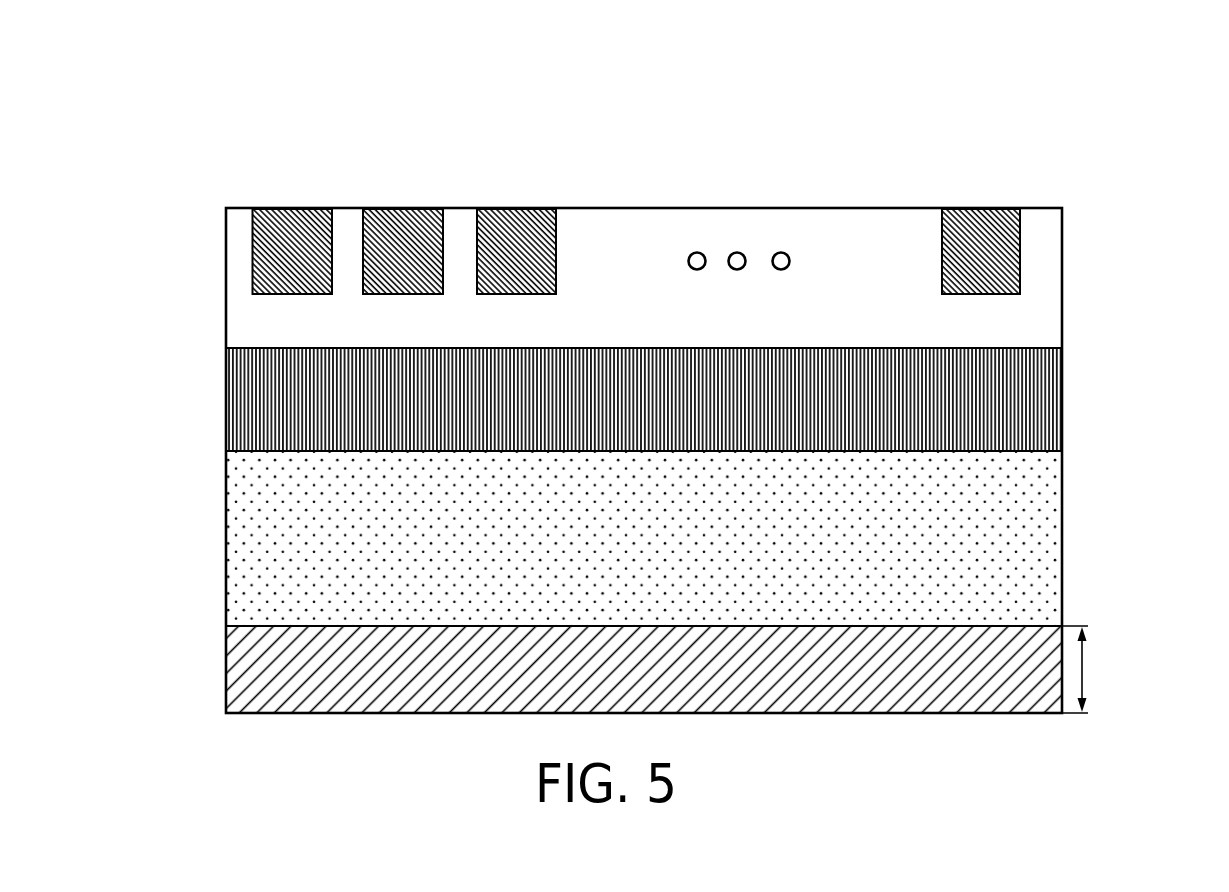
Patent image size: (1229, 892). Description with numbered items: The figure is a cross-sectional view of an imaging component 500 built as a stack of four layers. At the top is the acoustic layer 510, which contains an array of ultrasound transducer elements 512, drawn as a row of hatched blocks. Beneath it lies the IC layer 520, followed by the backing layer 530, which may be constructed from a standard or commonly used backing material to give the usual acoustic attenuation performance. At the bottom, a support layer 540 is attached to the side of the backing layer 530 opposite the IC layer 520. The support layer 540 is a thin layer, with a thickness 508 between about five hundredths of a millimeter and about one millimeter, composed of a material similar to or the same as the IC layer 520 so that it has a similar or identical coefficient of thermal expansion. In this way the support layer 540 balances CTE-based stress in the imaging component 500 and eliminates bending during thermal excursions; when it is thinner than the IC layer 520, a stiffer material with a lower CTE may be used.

The imaging component 500 is at (667, 390).
The thickness 508 is at (1086, 668).
The acoustic layer 510 is at (226, 273).
The ultrasound transducer elements 512 is at (289, 208).
The IC layer 520 is at (226, 399).
The backing layer 530 is at (226, 539).
The support layer 540 is at (226, 667).